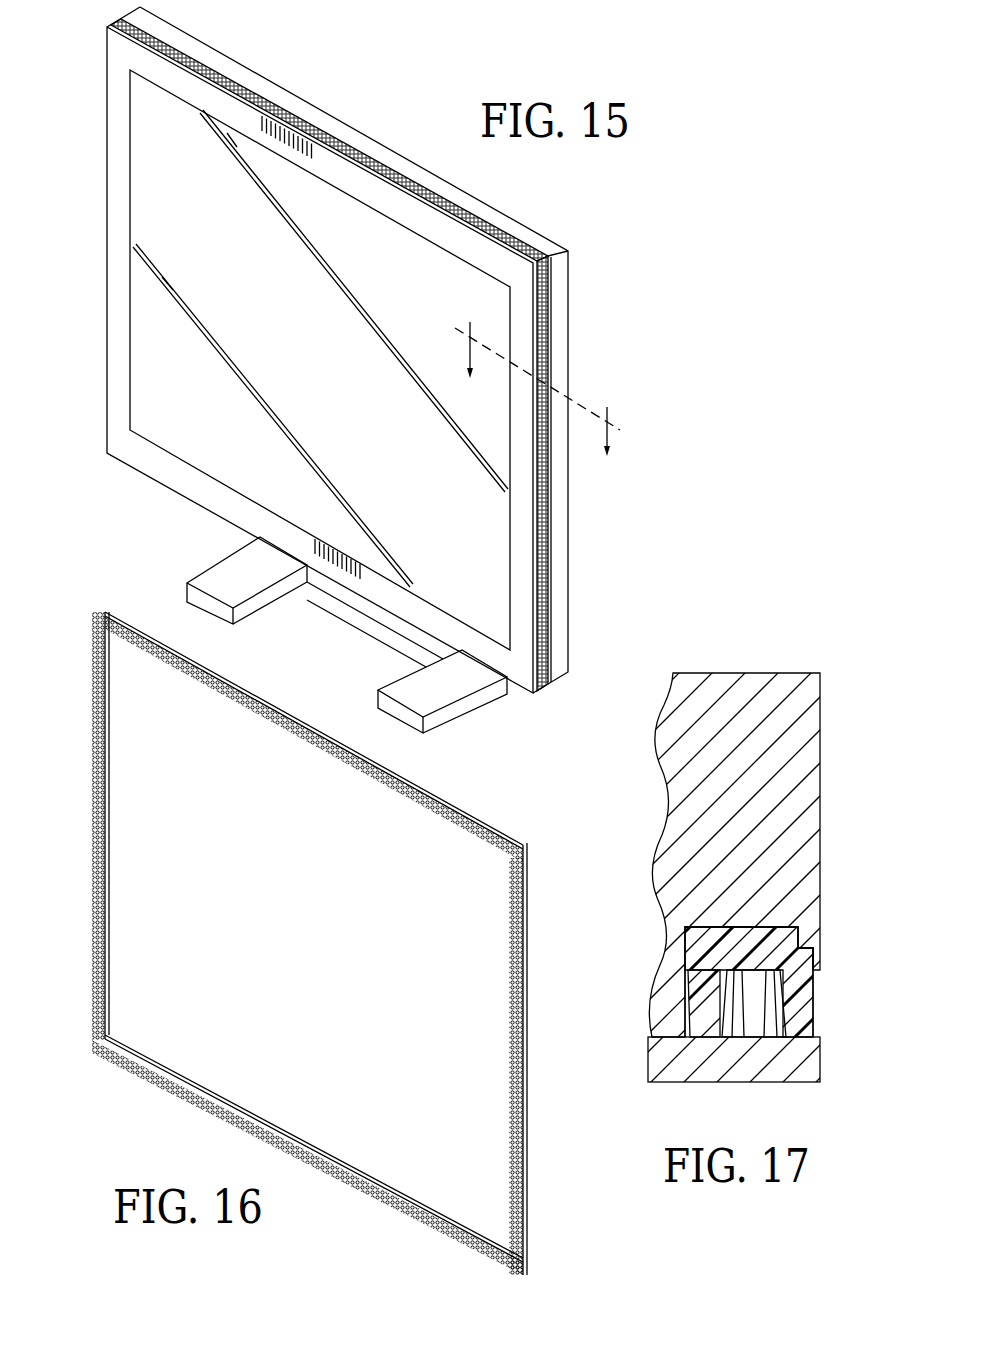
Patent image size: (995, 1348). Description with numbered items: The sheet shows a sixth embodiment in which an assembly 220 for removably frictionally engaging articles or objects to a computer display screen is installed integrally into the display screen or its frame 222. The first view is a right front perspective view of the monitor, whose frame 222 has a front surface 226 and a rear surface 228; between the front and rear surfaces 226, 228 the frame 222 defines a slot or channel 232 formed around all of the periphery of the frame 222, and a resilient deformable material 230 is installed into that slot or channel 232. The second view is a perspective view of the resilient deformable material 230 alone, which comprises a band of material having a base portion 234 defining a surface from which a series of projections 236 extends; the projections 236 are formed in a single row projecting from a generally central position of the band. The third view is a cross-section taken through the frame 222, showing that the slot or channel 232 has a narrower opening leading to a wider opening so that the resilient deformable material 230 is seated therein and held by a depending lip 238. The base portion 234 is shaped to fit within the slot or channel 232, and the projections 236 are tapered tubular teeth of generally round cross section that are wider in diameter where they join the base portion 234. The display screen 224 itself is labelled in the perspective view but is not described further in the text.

In FIG. 15, the assembly 220 is at (316, 84).
In FIG. 15, the frame 222 is at (571, 300).
In FIG. 15, the display screen 224 is at (392, 250).
In FIG. 15, the front surface 226 is at (118, 210).
In FIG. 17, the front surface 226 is at (767, 1082).
In FIG. 17, the rear surface 228 is at (803, 1032).
In FIG. 15, the resilient deformable material 230 is at (500, 238).
In FIG. 16, the resilient deformable material 230 is at (473, 822).
In FIG. 17, the resilient deformable material 230 is at (807, 961).
In FIG. 17, the slot or channel 232 is at (700, 954).
In FIG. 16, the base portion 234 is at (528, 1240).
In FIG. 17, the base portion 234 is at (773, 932).
In FIG. 16, the projections 236 is at (370, 1192).
In FIG. 17, the projections 236 is at (713, 1008).
In FIG. 17, the depending lip 238 is at (800, 940).